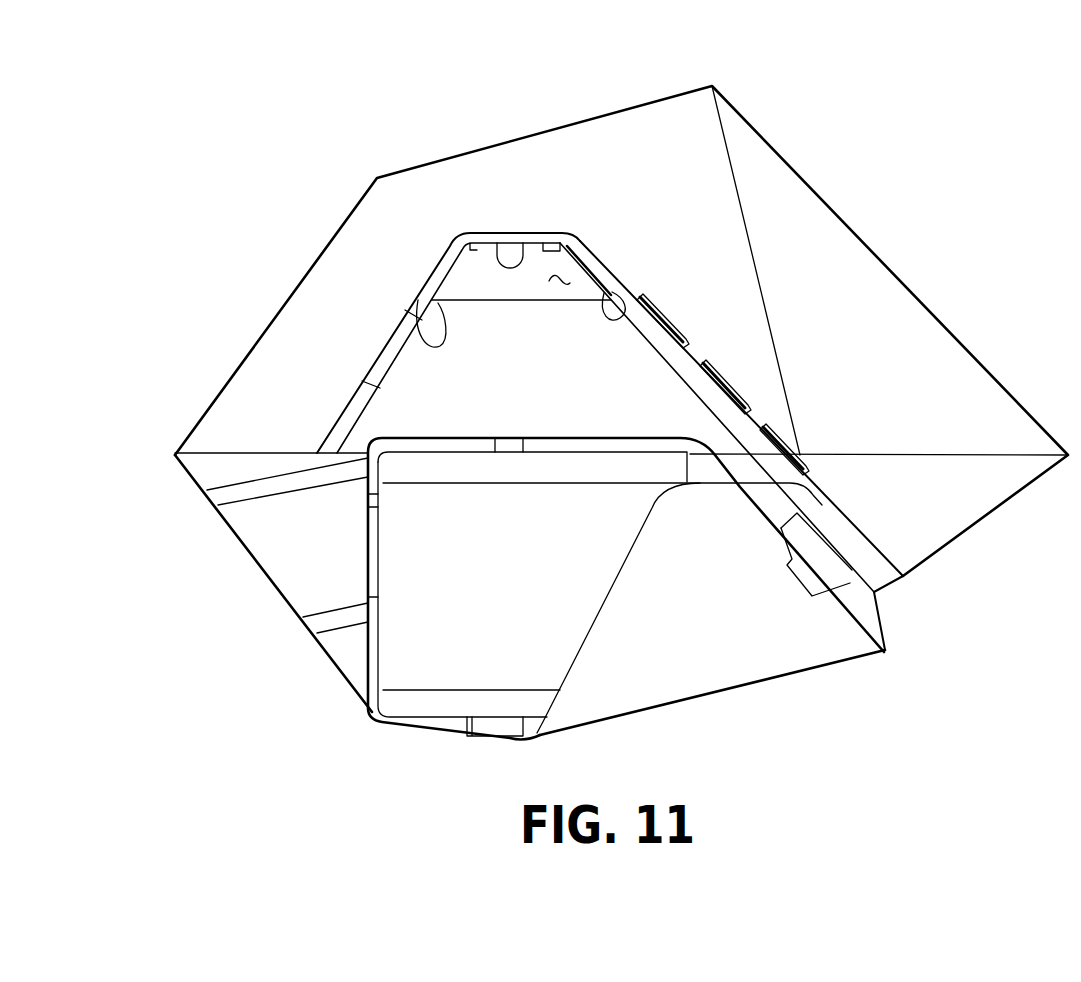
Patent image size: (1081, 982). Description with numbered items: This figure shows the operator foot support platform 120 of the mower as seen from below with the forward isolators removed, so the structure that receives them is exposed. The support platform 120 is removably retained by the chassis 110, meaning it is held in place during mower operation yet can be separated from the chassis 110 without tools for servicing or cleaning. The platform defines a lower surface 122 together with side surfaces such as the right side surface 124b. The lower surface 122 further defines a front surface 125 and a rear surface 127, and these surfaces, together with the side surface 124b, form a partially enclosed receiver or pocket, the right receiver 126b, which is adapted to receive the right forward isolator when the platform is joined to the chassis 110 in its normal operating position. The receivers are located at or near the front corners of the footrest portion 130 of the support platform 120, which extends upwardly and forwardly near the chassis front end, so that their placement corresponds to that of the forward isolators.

The chassis 110 is at (380, 444).
The operator foot support platform 120 is at (830, 499).
The lower surface 122 is at (517, 259).
The right side surface 124b is at (567, 277).
The front surface 125 is at (418, 345).
The right receiver 126b is at (441, 381).
The rear surface 127 is at (628, 308).
The footrest portion 130 is at (685, 362).